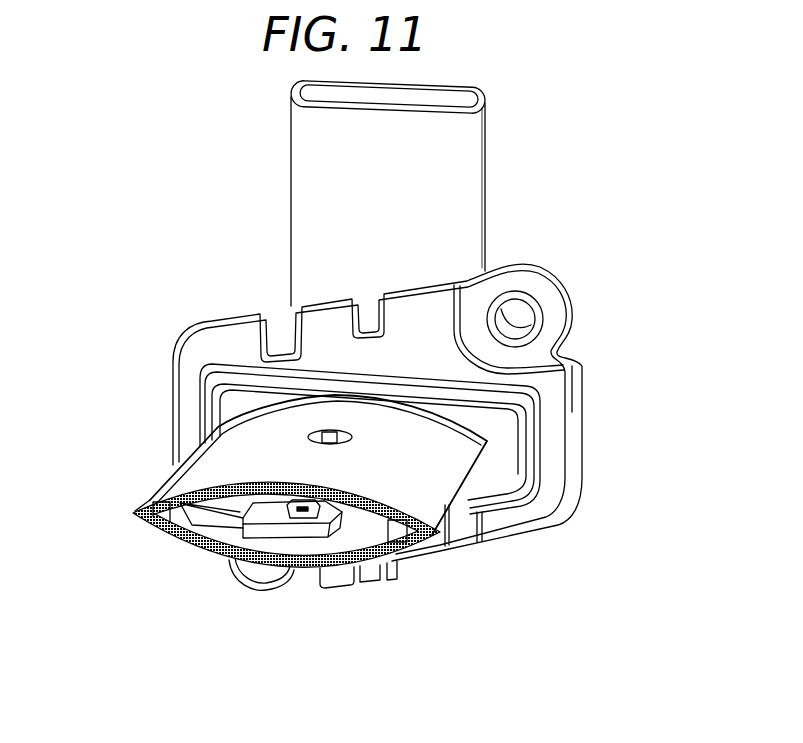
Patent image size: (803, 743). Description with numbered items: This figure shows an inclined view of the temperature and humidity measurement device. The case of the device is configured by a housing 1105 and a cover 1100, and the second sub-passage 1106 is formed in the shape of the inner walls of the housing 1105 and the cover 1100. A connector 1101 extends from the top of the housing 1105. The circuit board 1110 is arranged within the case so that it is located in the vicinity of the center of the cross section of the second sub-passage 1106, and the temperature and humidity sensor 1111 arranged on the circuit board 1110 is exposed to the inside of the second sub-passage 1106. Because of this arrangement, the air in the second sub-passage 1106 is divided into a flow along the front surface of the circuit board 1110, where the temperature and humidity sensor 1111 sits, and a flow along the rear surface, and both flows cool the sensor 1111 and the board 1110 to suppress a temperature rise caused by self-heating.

The cover 1100 is at (192, 478).
The connector 1101 is at (463, 190).
The housing 1105 is at (478, 512).
The second sub-passage 1106 is at (227, 523).
The circuit board 1110 is at (286, 528).
The temperature and humidity sensor 1111 is at (307, 520).